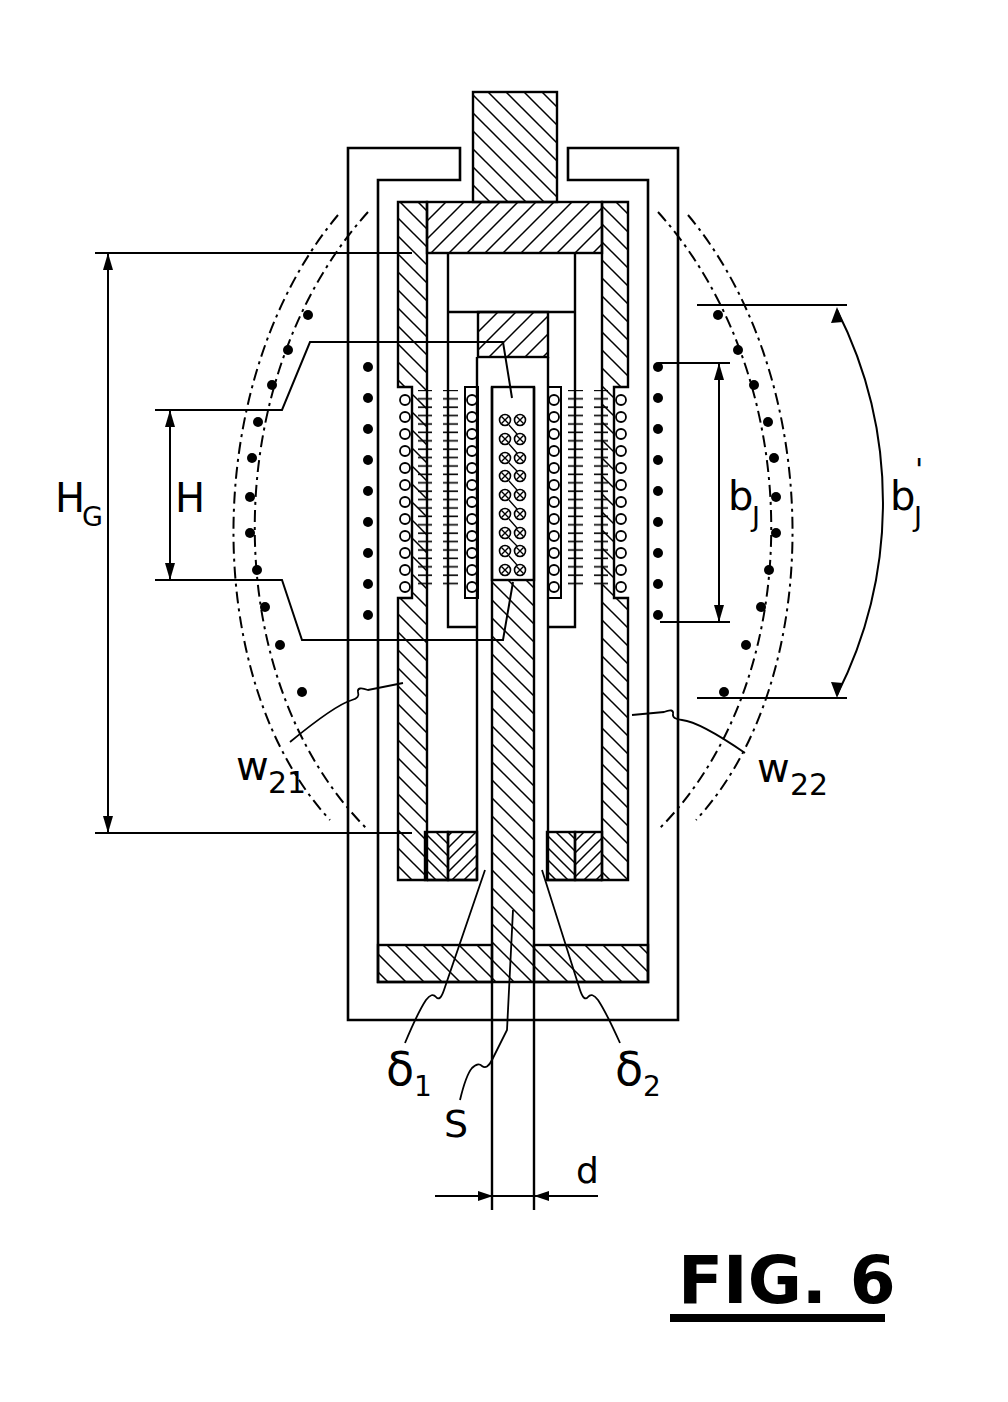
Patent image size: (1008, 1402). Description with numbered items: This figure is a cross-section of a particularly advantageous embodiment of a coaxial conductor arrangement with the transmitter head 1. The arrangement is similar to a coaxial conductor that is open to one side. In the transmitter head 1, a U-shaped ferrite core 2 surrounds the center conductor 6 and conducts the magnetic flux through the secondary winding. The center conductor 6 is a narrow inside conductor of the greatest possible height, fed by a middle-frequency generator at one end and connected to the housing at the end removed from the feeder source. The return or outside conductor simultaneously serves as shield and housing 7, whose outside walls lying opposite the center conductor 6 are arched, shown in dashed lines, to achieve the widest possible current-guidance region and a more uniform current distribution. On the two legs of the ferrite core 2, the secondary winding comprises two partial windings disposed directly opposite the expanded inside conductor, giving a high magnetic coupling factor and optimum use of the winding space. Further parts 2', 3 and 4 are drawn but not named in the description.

The transmitter head 1 is at (510, 196).
The U-shaped ferrite core 2 is at (378, 798).
The armature cavity 2' is at (487, 484).
The magnet housing 3 is at (614, 272).
The pole piece 4 is at (568, 340).
The center conductor 6 is at (517, 407).
The housing 7 is at (663, 989).